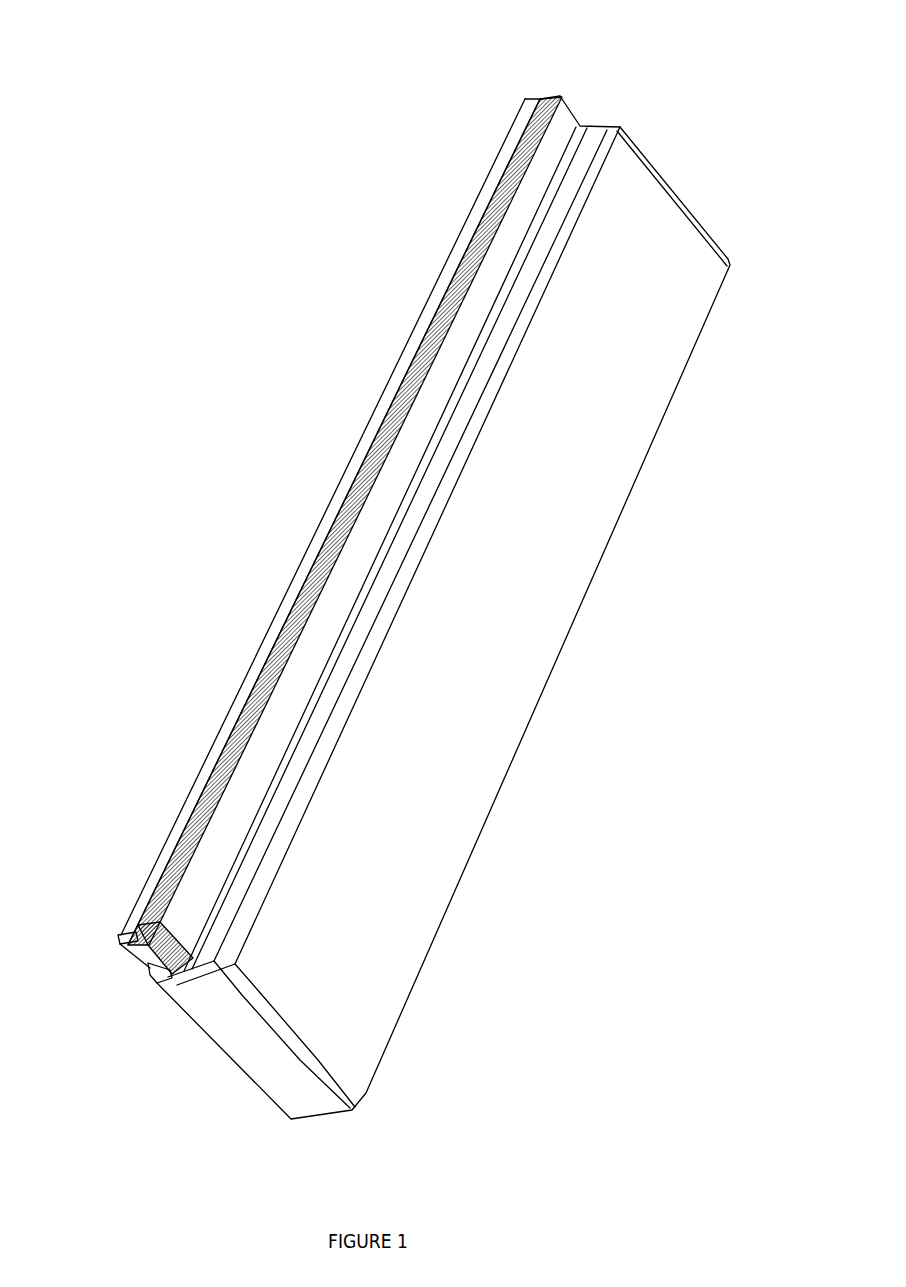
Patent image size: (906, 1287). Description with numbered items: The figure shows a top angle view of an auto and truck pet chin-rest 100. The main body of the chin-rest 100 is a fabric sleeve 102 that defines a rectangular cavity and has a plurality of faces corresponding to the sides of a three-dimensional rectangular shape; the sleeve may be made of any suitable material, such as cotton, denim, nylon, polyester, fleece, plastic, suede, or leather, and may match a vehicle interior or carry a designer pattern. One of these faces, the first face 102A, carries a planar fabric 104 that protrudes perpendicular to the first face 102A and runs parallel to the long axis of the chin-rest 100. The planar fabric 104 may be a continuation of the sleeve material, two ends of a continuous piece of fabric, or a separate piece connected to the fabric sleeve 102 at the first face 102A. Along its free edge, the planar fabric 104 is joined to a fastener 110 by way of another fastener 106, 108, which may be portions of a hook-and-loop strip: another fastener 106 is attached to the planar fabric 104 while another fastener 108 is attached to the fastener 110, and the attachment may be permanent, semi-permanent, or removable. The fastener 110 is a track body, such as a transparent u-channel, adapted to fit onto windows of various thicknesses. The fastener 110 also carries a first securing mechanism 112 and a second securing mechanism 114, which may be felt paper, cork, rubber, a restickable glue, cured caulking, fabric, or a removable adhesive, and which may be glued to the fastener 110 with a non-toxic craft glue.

The chin-rest 100 is at (506, 26).
The fabric sleeve 102 is at (673, 210).
The first face 102A is at (593, 137).
The planar fabric 104 is at (563, 101).
The another fastener 106 is at (150, 923).
The another fastener 108 is at (173, 860).
The fastener 110 is at (193, 803).
The first securing mechanism 112 is at (128, 949).
The second securing mechanism 114 is at (147, 976).